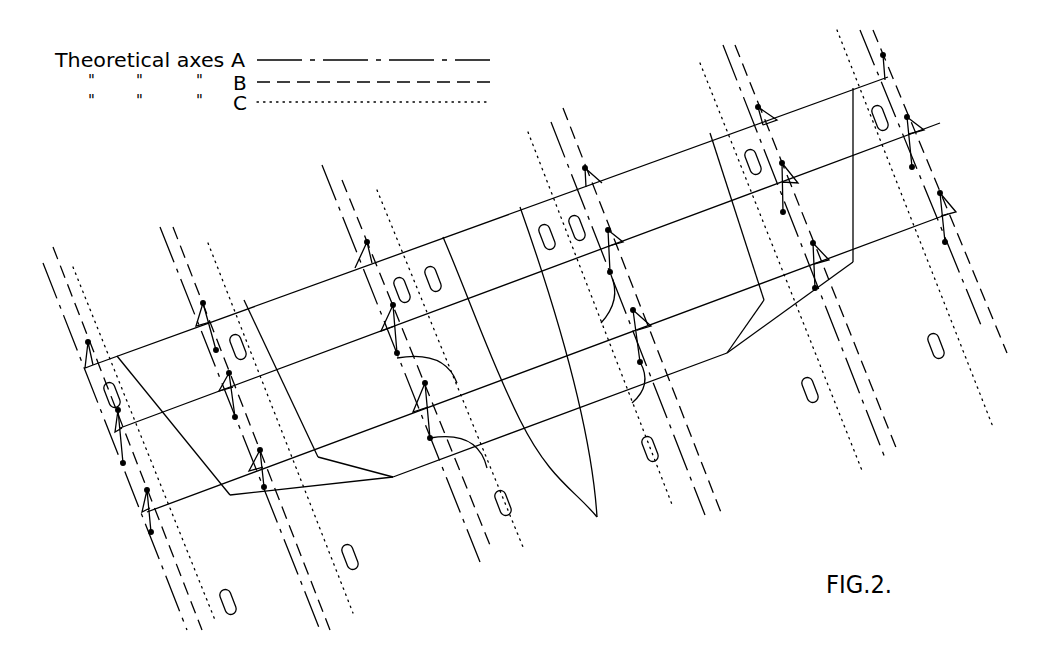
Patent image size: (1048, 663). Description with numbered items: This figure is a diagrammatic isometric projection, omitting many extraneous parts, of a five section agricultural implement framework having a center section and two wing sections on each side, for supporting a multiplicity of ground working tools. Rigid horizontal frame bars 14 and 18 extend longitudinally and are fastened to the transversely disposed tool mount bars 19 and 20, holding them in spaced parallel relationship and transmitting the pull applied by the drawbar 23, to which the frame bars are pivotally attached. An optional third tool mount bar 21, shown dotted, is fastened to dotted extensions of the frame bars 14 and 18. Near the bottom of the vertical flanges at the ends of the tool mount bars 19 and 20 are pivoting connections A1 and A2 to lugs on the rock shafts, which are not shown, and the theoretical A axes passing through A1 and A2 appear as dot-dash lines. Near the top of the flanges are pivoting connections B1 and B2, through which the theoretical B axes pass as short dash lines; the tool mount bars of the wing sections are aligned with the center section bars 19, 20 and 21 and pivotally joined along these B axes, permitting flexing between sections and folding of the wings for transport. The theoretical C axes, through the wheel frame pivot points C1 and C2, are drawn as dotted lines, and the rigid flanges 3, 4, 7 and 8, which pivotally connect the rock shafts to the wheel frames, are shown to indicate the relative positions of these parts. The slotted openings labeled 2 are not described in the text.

The slots 2 is at (507, 362).
The rigid flange 3 is at (447, 437).
The rigid flange 4 is at (633, 372).
The rigid flange 7 is at (433, 356).
The rigid flange 8 is at (599, 297).
The frame bar 14 is at (553, 297).
The frame bar 18 is at (487, 345).
The tool mount bar 19 is at (527, 373).
The tool mount bar 20 is at (516, 285).
The tool mount bar 21 is at (478, 222).
The drawbar 23 is at (583, 407).
The pivoting connection A1 is at (327, 188).
The pivoting connection B1 is at (345, 183).
The pivot point C1 is at (378, 192).
The pivoting connection A2 is at (551, 122).
The pivoting connection B2 is at (572, 137).
The pivot point C2 is at (538, 160).